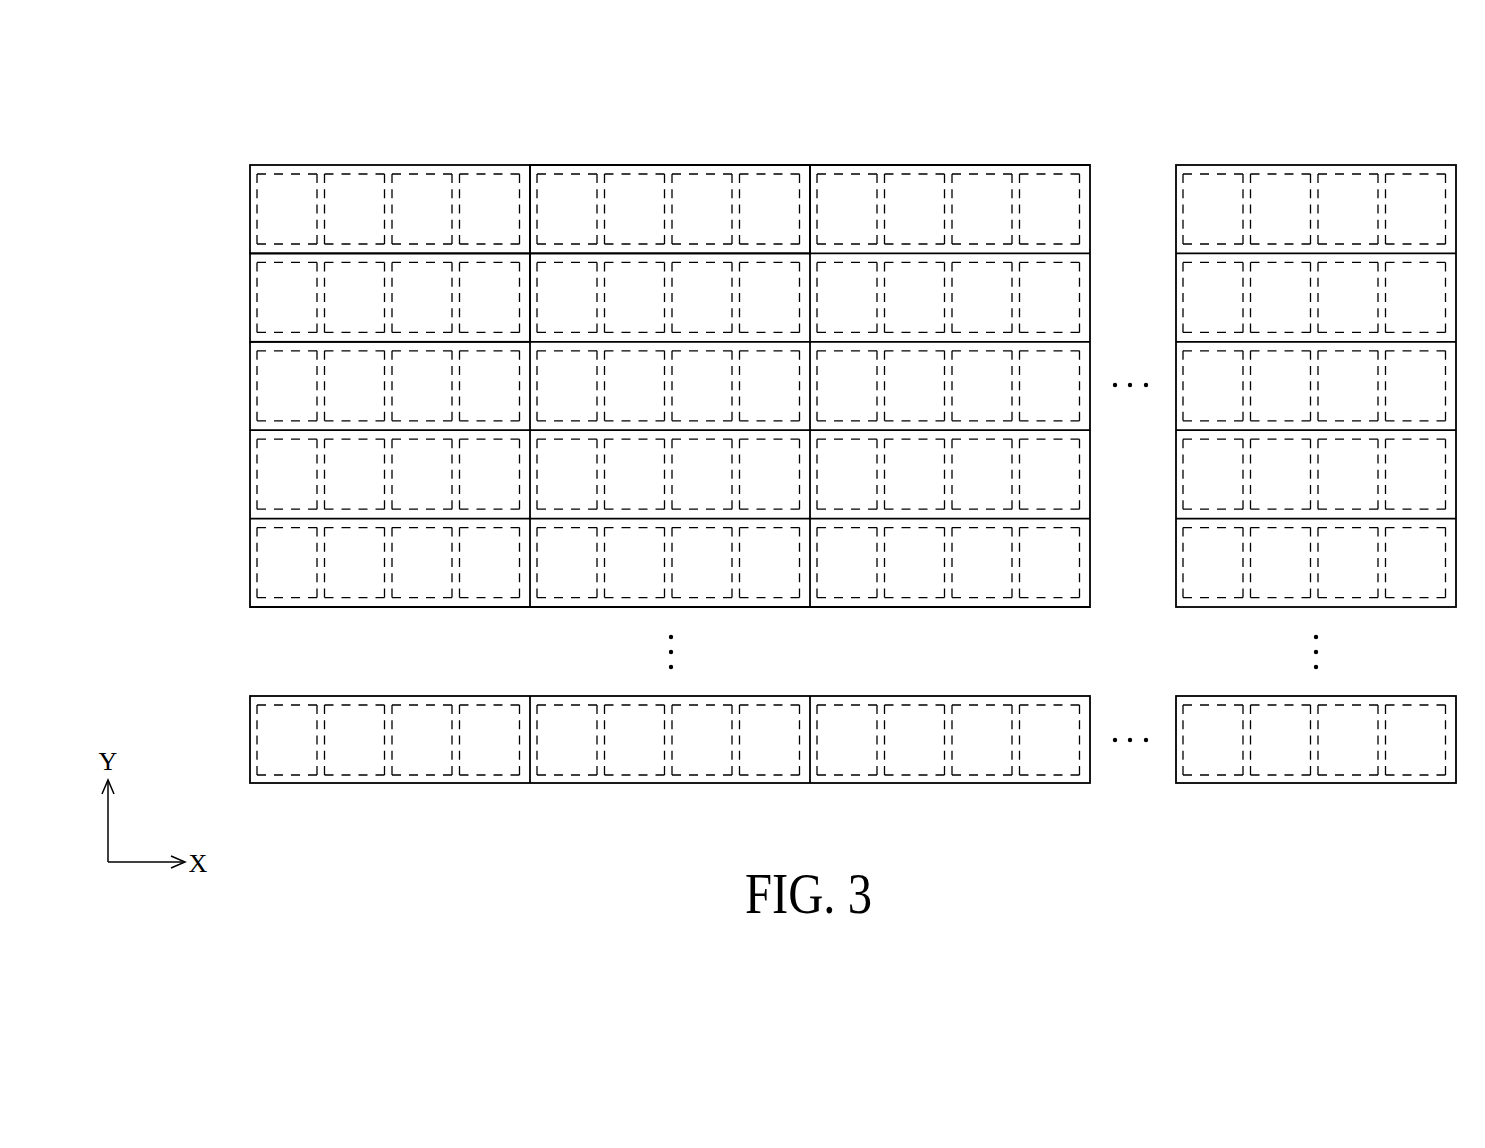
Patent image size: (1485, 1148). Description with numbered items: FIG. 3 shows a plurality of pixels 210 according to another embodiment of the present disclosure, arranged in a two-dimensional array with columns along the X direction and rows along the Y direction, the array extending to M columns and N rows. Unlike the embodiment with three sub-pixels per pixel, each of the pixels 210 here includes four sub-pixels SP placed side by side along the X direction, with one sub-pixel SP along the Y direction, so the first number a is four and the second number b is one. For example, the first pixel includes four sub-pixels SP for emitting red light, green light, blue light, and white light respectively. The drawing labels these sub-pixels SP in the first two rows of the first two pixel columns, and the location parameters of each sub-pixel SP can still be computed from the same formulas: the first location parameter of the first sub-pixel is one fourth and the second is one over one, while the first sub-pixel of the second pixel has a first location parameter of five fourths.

The pixel 210 is at (797, 466).
The sub-pixel SP is at (528, 253).